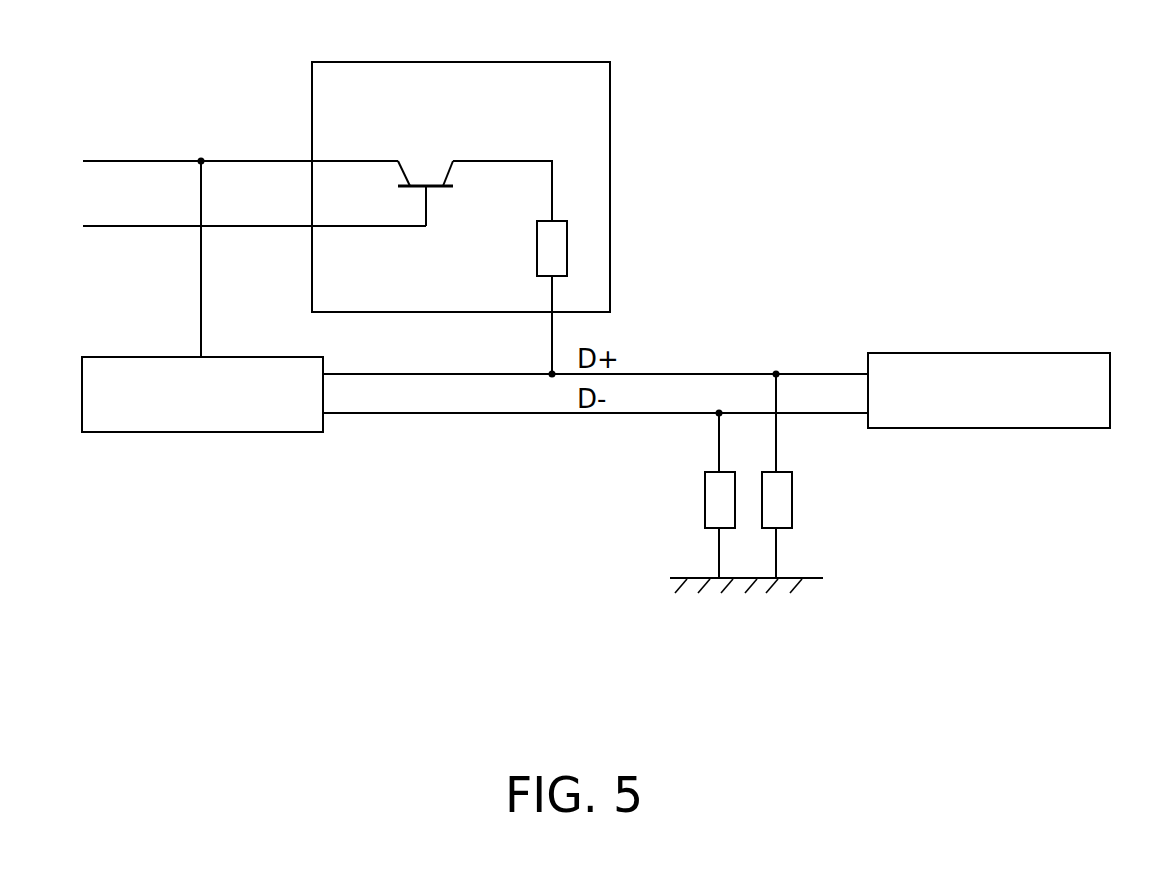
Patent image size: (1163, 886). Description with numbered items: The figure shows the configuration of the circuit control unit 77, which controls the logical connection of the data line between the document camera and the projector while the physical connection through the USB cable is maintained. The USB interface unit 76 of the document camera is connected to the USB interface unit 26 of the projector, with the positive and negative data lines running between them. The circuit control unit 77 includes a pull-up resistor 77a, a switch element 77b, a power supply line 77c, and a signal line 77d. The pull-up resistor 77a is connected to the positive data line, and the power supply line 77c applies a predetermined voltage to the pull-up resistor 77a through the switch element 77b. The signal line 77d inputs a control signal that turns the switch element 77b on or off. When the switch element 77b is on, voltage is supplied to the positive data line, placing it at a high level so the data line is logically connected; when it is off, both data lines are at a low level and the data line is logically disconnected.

The circuit control unit 77 is at (516, 63).
The pull-up resistor 77a is at (567, 248).
The switch element 77b is at (442, 150).
The power supply line 77c is at (333, 161).
The signal line 77d is at (333, 226).
The USB interface unit 76 is at (103, 357).
The USB interface unit 26 is at (888, 353).